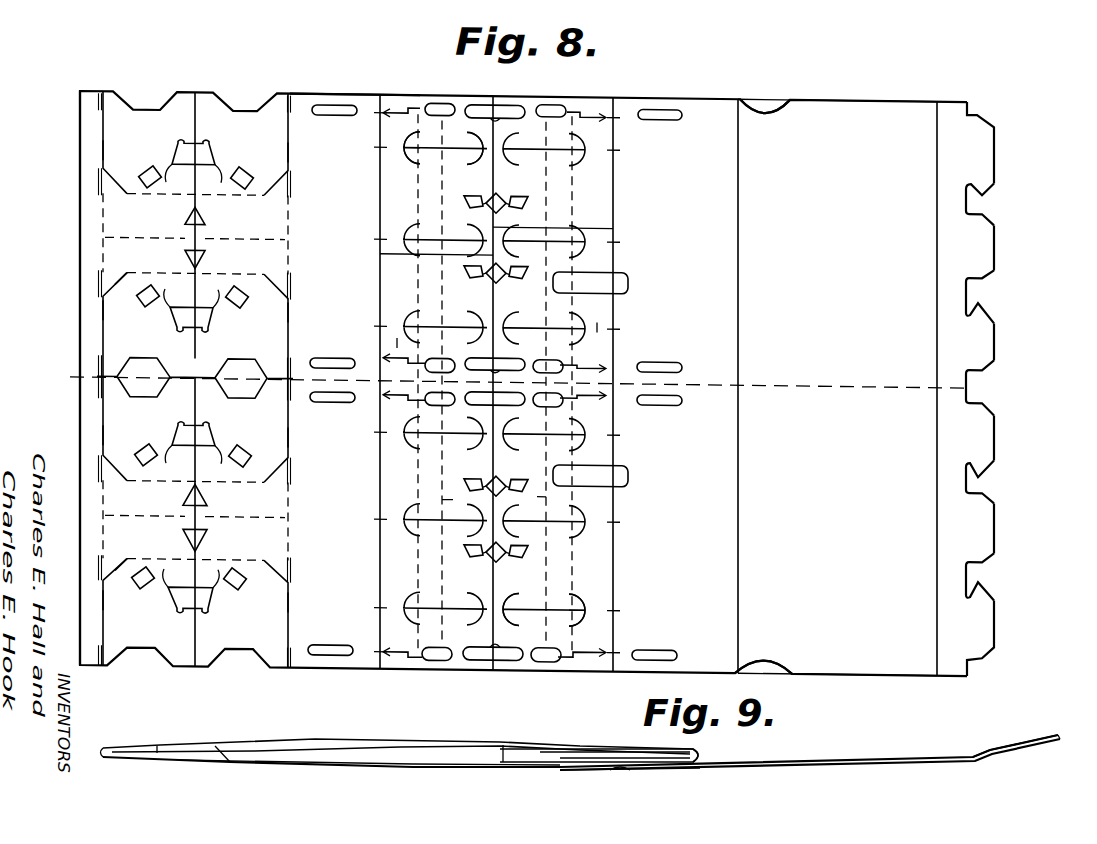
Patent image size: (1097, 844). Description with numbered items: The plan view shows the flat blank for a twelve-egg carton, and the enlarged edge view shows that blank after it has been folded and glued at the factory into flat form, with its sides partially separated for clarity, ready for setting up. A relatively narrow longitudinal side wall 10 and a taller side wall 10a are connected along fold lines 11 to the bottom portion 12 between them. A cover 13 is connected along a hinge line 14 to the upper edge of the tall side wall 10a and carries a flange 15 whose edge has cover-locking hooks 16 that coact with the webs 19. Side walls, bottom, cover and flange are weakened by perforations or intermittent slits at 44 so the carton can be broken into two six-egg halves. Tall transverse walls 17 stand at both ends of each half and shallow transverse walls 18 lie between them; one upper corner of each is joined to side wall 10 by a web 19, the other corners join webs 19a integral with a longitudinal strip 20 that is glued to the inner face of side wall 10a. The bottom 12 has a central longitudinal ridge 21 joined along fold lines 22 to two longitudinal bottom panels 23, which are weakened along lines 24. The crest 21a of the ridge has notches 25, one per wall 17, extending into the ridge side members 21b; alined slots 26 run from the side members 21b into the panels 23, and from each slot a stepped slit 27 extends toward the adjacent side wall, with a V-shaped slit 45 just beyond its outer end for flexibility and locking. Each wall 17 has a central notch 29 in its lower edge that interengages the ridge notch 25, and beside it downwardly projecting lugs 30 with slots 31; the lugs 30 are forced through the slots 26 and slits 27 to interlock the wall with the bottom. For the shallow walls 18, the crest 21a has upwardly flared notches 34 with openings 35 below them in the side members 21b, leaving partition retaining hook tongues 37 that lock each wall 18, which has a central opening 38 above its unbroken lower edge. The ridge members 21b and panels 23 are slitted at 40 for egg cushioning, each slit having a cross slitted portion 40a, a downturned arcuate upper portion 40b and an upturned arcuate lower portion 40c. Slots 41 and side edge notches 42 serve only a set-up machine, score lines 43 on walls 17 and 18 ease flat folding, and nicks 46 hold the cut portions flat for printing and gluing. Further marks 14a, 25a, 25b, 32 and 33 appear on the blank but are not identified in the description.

In FIG. 8, the longitudinal side wall 10 is at (347, 241).
In FIG. 9, the longitudinal side wall 10 is at (410, 743).
In FIG. 8, the taller side wall 10a is at (685, 210).
In FIG. 9, the taller side wall 10a is at (448, 768).
In FIG. 8, the fold lines 11 is at (376, 186).
In FIG. 9, the fold lines 11 is at (330, 742).
In FIG. 8, the bottom portion 12 is at (420, 89).
In FIG. 9, the bottom portion 12 is at (211, 745).
In FIG. 8, the cover 13 is at (844, 244).
In FIG. 9, the cover 13 is at (812, 760).
In FIG. 8, the hinge line 14 is at (741, 316).
In FIG. 9, the hinge line 14 is at (580, 772).
In FIG. 8, the fold line 14a is at (937, 315).
In FIG. 8, the flange 15 is at (970, 137).
In FIG. 9, the flange 15 is at (990, 752).
In FIG. 8, the cover-locking hooks 16 is at (984, 183).
In FIG. 9, the cover-locking hooks 16 is at (1060, 737).
In FIG. 8, the tall transverse walls 17 is at (154, 137).
In FIG. 9, the tall transverse walls 17 is at (639, 748).
In FIG. 8, the shallow transverse walls 18 is at (254, 227).
In FIG. 8, the web 19 is at (279, 98).
In FIG. 9, the web 19 is at (538, 748).
In FIG. 8, the webs 19a is at (124, 66).
In FIG. 9, the webs 19a is at (570, 756).
In FIG. 8, the longitudinal strip 20 is at (80, 131).
In FIG. 9, the longitudinal strip 20 is at (503, 750).
In FIG. 9, the central longitudinal ridge 21 is at (158, 745).
In FIG. 8, the crest 21a is at (495, 99).
In FIG. 9, the crest 21a is at (103, 750).
In FIG. 8, the ridge side members 21b is at (453, 495).
In FIG. 8, the fold lines 22 is at (378, 278).
In FIG. 8, the longitudinal bottom panels 23 is at (397, 339).
In FIG. 8, the weakened lines 24 is at (405, 301).
In FIG. 8, the notches 25 is at (512, 99).
In FIG. 8, the slot projection 25a is at (515, 99).
In FIG. 8, the slot projection 25b is at (512, 655).
In FIG. 8, the slots 26 is at (444, 99).
In FIG. 8, the slit 27 is at (388, 106).
In FIG. 8, the central notch 29 is at (220, 146).
In FIG. 8, the lugs 30 is at (218, 183).
In FIG. 8, the slot 31 is at (151, 168).
In FIG. 8, the notch 32 is at (105, 152).
In FIG. 8, the slot 33 is at (333, 102).
In FIG. 8, the upwardly flared notches 34 is at (487, 204).
In FIG. 8, the opening 35 is at (470, 191).
In FIG. 8, the partition retaining hook tongues 37 is at (492, 193).
In FIG. 8, the central opening 38 is at (188, 262).
In FIG. 8, the slits 40 is at (398, 144).
In FIG. 8, the cross slitted portion 40a is at (466, 149).
In FIG. 8, the upper arcuate portion 40b is at (514, 597).
In FIG. 8, the lower arcuate portion 40c is at (412, 159).
In FIG. 8, the slots 41 is at (630, 274).
In FIG. 8, the side edge notches 42 is at (765, 102).
In FIG. 9, the side edge notches 42 is at (616, 771).
In FIG. 8, the score lines 43 is at (191, 100).
In FIG. 9, the score lines 43 is at (703, 758).
In FIG. 8, the weakening line 44 is at (831, 377).
In FIG. 8, the V-shaped slit 45 is at (386, 111).
In FIG. 8, the nicks 46 is at (146, 280).